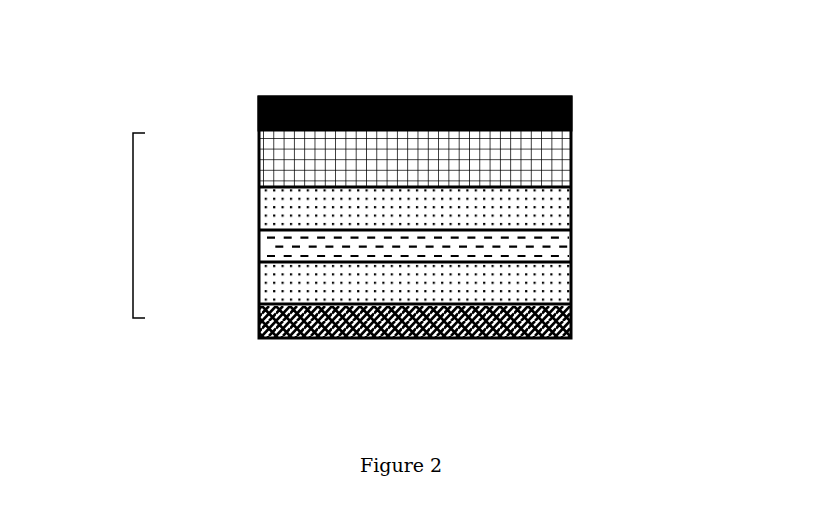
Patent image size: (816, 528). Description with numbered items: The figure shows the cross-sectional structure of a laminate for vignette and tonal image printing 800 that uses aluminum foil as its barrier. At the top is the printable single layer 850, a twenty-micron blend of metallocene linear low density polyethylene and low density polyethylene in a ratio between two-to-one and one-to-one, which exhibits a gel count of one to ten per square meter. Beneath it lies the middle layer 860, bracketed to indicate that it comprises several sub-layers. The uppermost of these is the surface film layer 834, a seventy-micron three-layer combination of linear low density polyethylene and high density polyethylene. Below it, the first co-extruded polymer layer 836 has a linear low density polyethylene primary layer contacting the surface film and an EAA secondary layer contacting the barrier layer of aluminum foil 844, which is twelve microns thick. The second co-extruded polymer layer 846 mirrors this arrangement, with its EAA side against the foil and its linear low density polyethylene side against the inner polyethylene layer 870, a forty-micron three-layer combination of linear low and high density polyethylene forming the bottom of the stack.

The laminate for vignette and tonal image printing 800 is at (317, 68).
The top printable single layer 850 is at (545, 117).
The surface film layer 834 is at (527, 155).
The first co-extruded polymer layer 836 is at (548, 203).
The barrier layer of aluminum foil 844 is at (275, 247).
The second co-extruded polymer layer 846 is at (298, 288).
The middle layer 860 is at (106, 225).
The inner polyethylene (PE) layer 870 is at (543, 315).